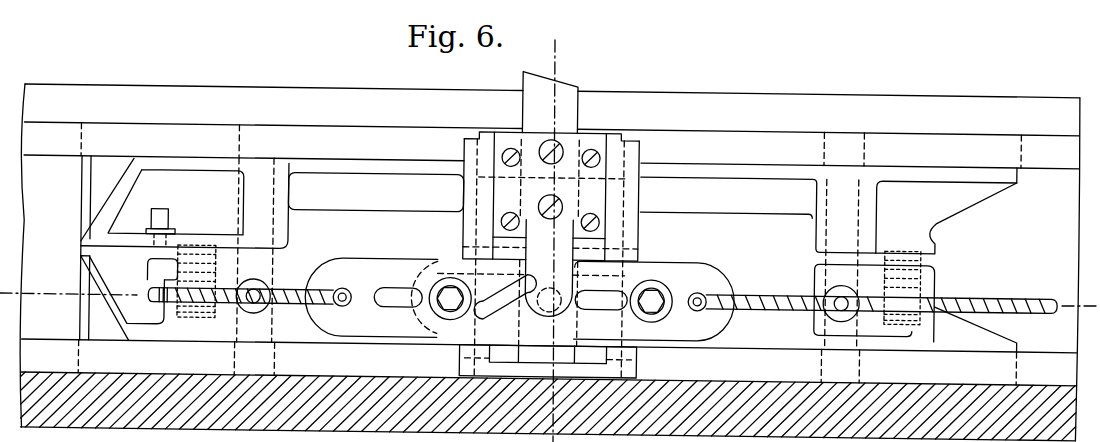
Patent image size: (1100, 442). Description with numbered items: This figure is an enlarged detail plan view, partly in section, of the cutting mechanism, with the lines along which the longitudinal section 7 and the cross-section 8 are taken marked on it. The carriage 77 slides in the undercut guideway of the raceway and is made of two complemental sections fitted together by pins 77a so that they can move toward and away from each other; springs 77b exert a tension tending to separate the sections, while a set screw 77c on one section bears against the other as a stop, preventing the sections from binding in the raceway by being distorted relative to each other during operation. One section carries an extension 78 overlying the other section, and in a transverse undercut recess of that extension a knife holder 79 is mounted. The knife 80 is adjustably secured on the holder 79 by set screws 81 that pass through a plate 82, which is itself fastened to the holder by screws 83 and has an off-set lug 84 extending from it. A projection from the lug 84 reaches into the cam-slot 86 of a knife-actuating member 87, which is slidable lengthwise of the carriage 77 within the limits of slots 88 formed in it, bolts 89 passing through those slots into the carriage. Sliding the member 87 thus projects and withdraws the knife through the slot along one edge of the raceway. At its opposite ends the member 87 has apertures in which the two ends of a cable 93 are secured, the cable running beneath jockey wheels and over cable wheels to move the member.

The section line 7— 7 is at (550, 302).
The section line 8— 8 is at (558, 241).
The carriage 77 is at (88, 272).
The pins 77a is at (290, 249).
The springs 77b is at (193, 246).
The set screw 77c is at (158, 213).
The extension 78 is at (468, 359).
The knife holder 79 is at (603, 239).
The knife 80 is at (573, 105).
The set screws 81 is at (555, 196).
The plate 82 is at (598, 187).
The screws 83 is at (500, 149).
The off-set lug 84 is at (549, 268).
The cam-slot 86 is at (508, 302).
The knife-actuating member 87 is at (387, 257).
The slots 88 is at (387, 295).
The bolts 89 is at (448, 290).
The cable 93 is at (238, 293).